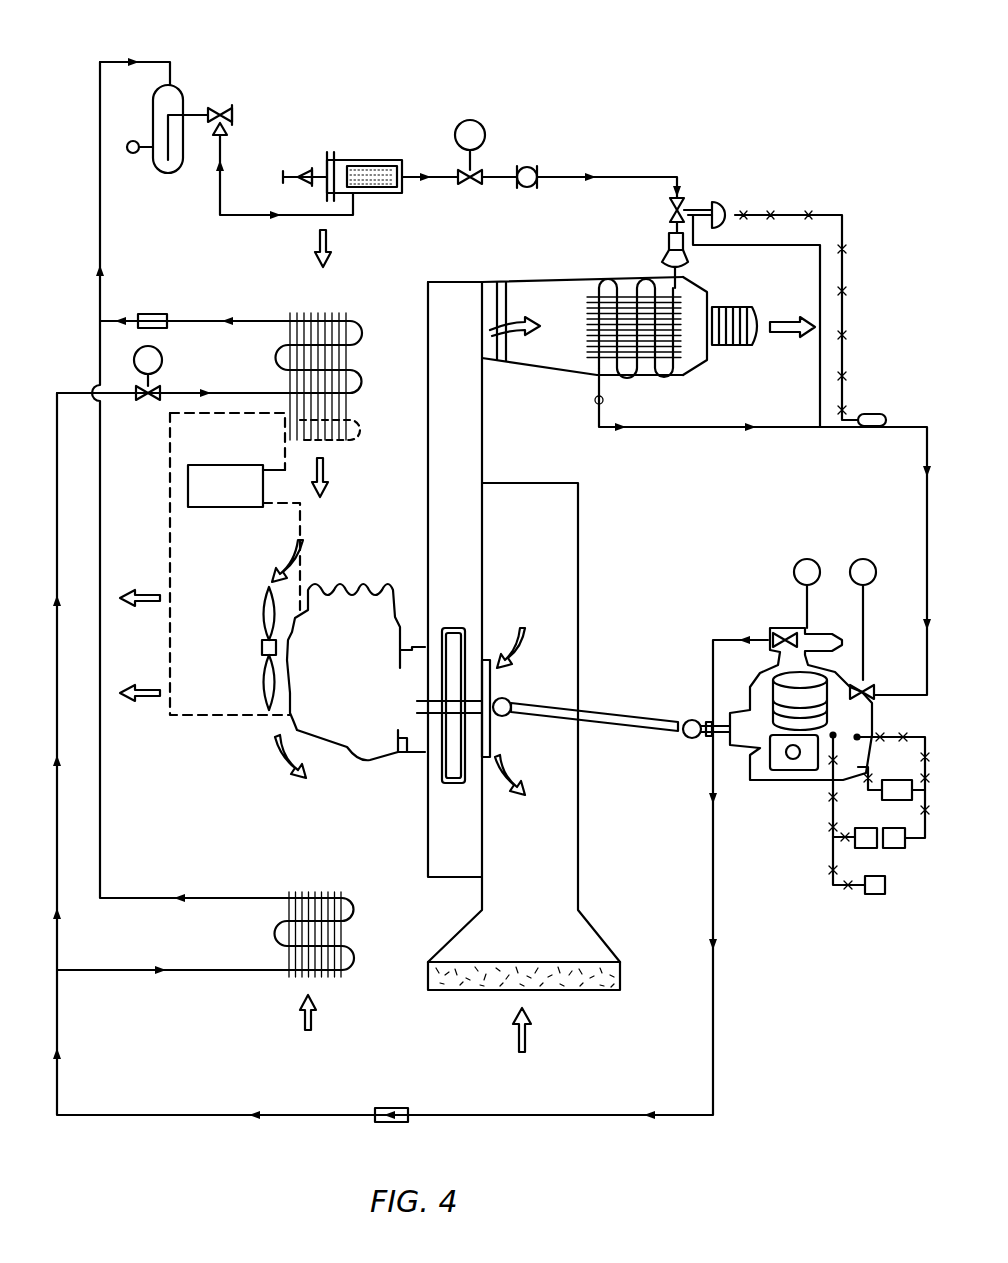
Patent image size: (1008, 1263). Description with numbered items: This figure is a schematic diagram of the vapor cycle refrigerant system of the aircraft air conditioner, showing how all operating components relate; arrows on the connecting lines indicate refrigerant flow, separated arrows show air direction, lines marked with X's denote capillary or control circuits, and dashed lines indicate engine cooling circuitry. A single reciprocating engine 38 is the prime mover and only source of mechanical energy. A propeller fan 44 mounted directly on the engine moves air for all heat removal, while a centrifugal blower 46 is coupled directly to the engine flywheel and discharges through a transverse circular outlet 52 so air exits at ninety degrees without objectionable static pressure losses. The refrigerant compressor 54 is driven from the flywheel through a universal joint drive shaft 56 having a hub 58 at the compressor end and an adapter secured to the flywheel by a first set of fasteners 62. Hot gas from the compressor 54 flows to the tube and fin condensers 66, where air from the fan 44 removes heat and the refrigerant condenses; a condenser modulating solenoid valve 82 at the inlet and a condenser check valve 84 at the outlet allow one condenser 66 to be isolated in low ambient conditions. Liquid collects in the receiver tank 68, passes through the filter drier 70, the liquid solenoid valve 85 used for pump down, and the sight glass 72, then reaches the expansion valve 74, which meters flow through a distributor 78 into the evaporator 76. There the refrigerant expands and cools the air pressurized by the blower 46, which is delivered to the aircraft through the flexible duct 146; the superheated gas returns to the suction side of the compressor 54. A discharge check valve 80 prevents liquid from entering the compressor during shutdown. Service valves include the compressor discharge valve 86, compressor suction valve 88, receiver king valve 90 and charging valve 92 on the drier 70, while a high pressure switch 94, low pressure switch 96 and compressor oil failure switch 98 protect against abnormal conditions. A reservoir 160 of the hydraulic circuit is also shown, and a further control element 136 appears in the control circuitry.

The reciprocating engine 38 is at (382, 594).
The propeller fan 44 is at (263, 620).
The centrifugal blower 46 is at (428, 826).
The transverse circular outlet 52 is at (500, 282).
The refrigerant compressor 54 is at (792, 780).
The universal joint drive shaft 56 is at (645, 686).
The hub 58 is at (692, 740).
The first set of fasteners 62 is at (508, 700).
The condenser 66 is at (393, 289).
The receiver tank 68 is at (176, 85).
The filter drier 70 is at (356, 160).
The sight glass 72 is at (590, 142).
The expansion valve 74 is at (692, 204).
The evaporator 76 is at (632, 252).
The distributor 78 is at (698, 243).
The discharge check valve 80 is at (398, 1108).
The condenser modulating solenoid valve 82 is at (225, 366).
The condenser check valve 84 is at (192, 288).
The liquid solenoid valve 85 is at (480, 122).
The compressor discharge valve 86 is at (776, 630).
The compressor suction valve 88 is at (870, 688).
The receiver king valve 90 is at (220, 107).
The charging valve 92 is at (302, 172).
The high pressure switch 94 is at (856, 842).
The low pressure switch 96 is at (894, 848).
The compressor oil failure switch 98 is at (914, 770).
The control unit 136 is at (876, 894).
The flexible duct 146 is at (773, 292).
The reservoir 160 is at (244, 466).